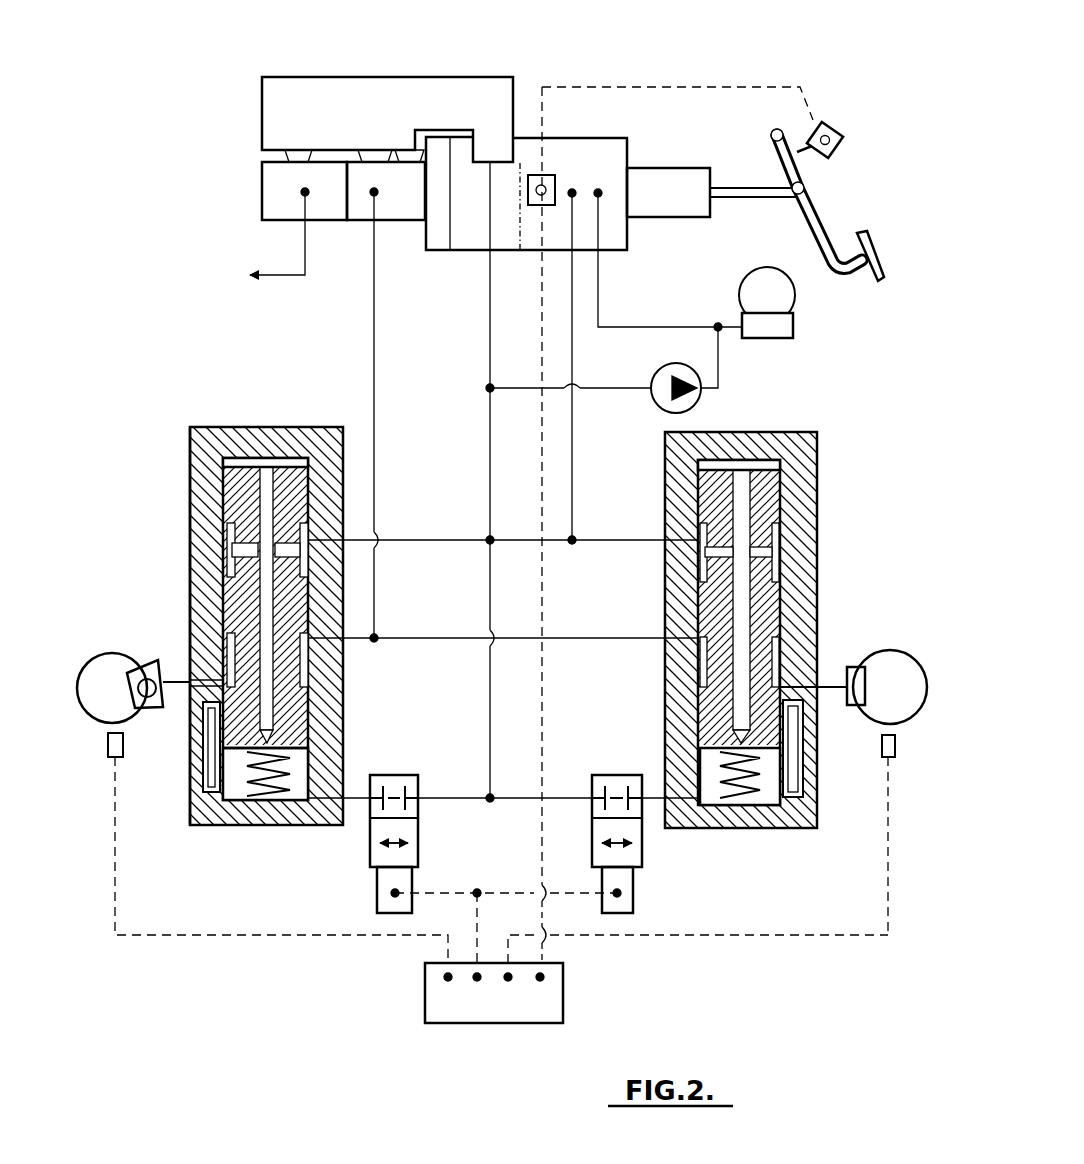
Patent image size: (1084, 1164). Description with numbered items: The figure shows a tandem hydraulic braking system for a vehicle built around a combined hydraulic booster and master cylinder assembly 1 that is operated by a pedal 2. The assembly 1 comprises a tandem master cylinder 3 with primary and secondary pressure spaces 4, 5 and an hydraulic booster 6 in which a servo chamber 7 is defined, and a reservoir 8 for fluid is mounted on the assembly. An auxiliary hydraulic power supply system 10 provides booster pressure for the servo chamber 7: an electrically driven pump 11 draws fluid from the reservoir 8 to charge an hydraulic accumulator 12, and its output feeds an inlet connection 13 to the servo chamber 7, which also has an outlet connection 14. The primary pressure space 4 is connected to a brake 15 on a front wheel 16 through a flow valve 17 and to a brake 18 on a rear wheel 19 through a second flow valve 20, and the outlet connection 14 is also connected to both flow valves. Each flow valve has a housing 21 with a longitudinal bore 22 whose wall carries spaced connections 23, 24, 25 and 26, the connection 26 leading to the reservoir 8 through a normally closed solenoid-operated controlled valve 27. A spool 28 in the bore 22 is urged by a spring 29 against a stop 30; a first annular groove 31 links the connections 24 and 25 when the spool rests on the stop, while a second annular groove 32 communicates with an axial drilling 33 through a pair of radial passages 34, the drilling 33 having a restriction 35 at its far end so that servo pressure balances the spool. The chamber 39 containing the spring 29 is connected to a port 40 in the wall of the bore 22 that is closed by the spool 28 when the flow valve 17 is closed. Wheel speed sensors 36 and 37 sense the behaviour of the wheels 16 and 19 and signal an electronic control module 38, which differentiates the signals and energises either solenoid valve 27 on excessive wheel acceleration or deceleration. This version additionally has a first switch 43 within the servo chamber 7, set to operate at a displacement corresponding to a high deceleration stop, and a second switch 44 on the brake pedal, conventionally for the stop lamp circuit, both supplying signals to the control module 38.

The combined hydraulic booster and master cylinder assembly 1 is at (568, 167).
The pedal 2 is at (818, 227).
The tandem master cylinder 3 is at (407, 195).
The primary pressure space 4 is at (386, 208).
The secondary pressure space 5 is at (325, 200).
The hydraulic booster 6 is at (580, 193).
The servo chamber 7 is at (533, 228).
The reservoir 8 is at (420, 100).
The auxiliary hydraulic power supply system 10 is at (672, 318).
The electrically driven pump 11 is at (687, 400).
The hydraulic accumulator 12 is at (782, 327).
The inlet connection 13 is at (600, 190).
The outlet connection 14 is at (590, 198).
The brake 15 is at (138, 673).
The front wheel 16 is at (90, 677).
The flow valve 17 is at (233, 440).
The brake 18 is at (860, 670).
The rear wheel 19 is at (890, 672).
The second flow valve 20 is at (797, 467).
The housing 21 is at (287, 440).
The bore 22 is at (245, 482).
The connection 23 is at (323, 530).
The connection 24 is at (323, 640).
The connection 25 is at (203, 682).
The connection 26 is at (343, 793).
The first solenoid-operated controlled valve 27 is at (408, 787).
The spool 28 is at (222, 462).
The spring 29 is at (280, 797).
The stop 30 is at (257, 468).
The first annular groove 31 is at (330, 665).
The second annular groove 32 is at (235, 558).
The axial drilling 33 is at (240, 452).
The radial passages 34 is at (237, 543).
The restriction 35 is at (225, 742).
The wheel speed sensor 36 is at (115, 760).
The wheel speed sensor 37 is at (884, 757).
The electronic control module 38 is at (480, 998).
The chamber 39 is at (237, 787).
The port 40 is at (198, 710).
The first switch 43 is at (563, 173).
The second switch 44 is at (838, 127).